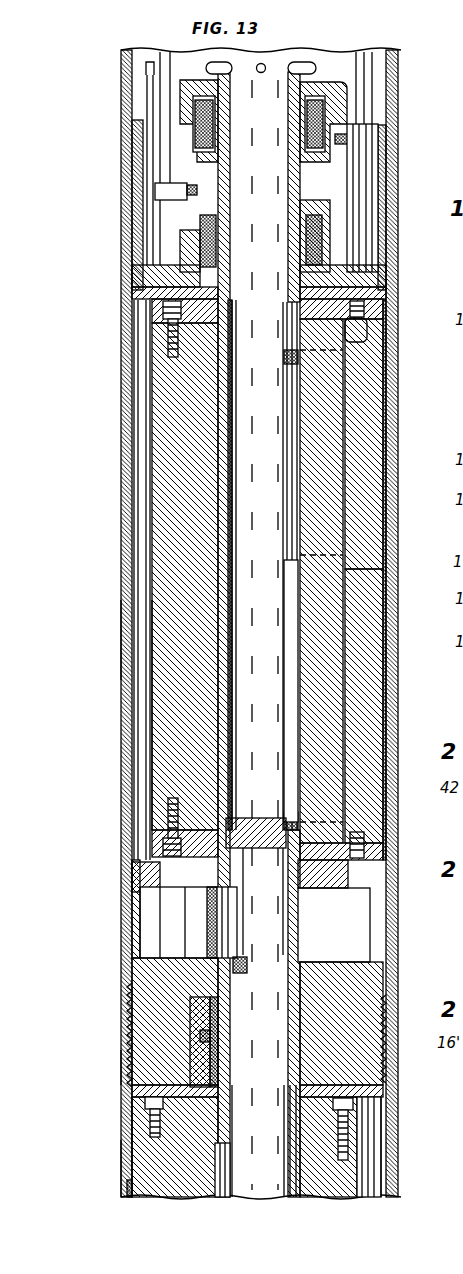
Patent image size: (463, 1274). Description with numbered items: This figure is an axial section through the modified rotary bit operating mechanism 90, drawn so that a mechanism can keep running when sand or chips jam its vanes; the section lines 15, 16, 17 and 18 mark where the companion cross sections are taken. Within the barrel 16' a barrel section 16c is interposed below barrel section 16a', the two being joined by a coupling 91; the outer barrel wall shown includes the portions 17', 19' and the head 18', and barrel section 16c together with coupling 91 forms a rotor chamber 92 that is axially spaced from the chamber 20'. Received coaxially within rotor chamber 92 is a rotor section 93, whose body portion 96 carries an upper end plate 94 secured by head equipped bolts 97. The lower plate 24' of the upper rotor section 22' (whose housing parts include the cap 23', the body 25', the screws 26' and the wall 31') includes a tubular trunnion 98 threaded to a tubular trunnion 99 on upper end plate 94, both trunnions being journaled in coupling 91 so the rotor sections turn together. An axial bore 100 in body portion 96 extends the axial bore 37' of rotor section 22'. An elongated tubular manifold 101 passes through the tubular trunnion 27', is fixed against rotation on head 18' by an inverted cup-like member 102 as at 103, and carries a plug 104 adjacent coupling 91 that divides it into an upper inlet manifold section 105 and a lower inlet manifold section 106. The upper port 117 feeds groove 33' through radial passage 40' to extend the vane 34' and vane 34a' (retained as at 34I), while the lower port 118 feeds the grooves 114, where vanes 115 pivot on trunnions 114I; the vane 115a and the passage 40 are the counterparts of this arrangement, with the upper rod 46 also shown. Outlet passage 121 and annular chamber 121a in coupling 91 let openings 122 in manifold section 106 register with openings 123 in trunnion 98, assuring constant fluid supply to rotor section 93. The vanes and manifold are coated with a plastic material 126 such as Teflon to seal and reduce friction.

The section line 15- 15 is at (64, 55).
The section line 16- 16 is at (257, 393).
The tubular coupler 17 is at (255, 954).
The section line 18- 18 is at (256, 1131).
The barrel 16' is at (95, 623).
The barrel section 16a' is at (85, 640).
The barrel section 16c is at (122, 1055).
The upper housing wall 17' is at (409, 623).
The head 18' is at (370, 263).
The housing end plate 19' is at (369, 282).
The chamber 20' is at (101, 580).
The rotor section 22' is at (107, 580).
The cap 23' is at (141, 312).
The lower plate 24' is at (140, 846).
The body member 25' is at (148, 576).
The screw 26' is at (123, 578).
The tubular trunnion 27' is at (339, 162).
The body wall 31' is at (113, 715).
The groove 33' is at (368, 581).
The vane 34' is at (392, 706).
The vane 34a' is at (394, 444).
The retaining screw 34I is at (388, 318).
The axial bore 37' is at (270, 691).
The passage 40 is at (293, 688).
The radial passage 40' is at (293, 375).
The rod 46 is at (171, 158).
The rotary bit operating mechanism 90 is at (107, 481).
The coupling 91 is at (145, 1005).
The rotor chamber 92 is at (370, 1172).
The rotor section 93 is at (360, 1190).
The upper end plate 94 is at (356, 1120).
The body portion 96 is at (342, 1195).
The head equipped bolts 97 is at (350, 1135).
The tubular trunnion 98 is at (210, 1022).
The tubular trunnion 99 is at (210, 1067).
The axial bore 100 is at (295, 1180).
The tubular manifold 101 is at (218, 440).
The inverted cup-like member 102 is at (318, 84).
The fixing point 103 is at (348, 133).
The plug 104 is at (252, 818).
The upper inlet manifold section 105 is at (273, 455).
The lower inlet manifold section 106 is at (270, 1124).
The grooves 114 is at (170, 1177).
The trunnions 114I is at (150, 1115).
The vanes 115 is at (132, 1175).
The lower body portion 115a is at (140, 1160).
The upper radially opening port 117 is at (288, 517).
The lower radially opening port 118 is at (222, 1163).
The outlet passage 121 is at (135, 873).
The annular chamber 121a is at (350, 913).
The openings 122 is at (237, 958).
The openings 123 is at (223, 922).
The plastic material 126 is at (220, 498).